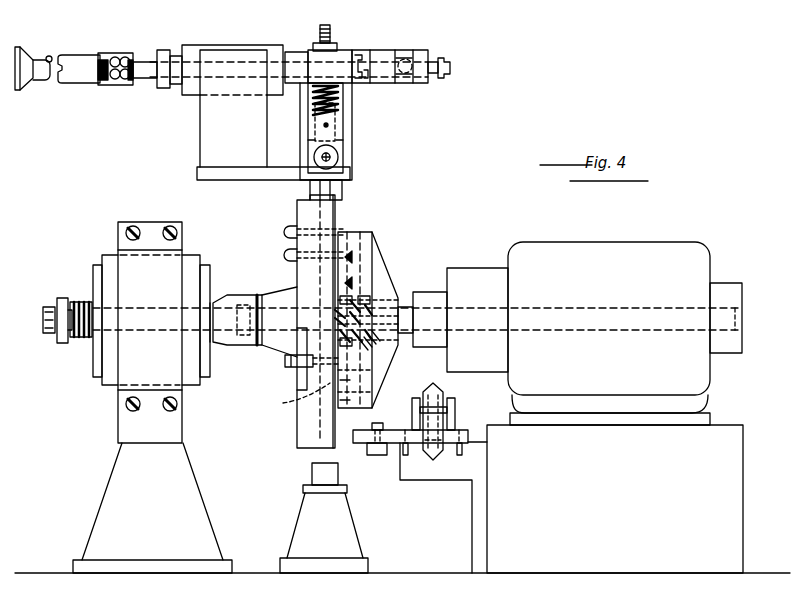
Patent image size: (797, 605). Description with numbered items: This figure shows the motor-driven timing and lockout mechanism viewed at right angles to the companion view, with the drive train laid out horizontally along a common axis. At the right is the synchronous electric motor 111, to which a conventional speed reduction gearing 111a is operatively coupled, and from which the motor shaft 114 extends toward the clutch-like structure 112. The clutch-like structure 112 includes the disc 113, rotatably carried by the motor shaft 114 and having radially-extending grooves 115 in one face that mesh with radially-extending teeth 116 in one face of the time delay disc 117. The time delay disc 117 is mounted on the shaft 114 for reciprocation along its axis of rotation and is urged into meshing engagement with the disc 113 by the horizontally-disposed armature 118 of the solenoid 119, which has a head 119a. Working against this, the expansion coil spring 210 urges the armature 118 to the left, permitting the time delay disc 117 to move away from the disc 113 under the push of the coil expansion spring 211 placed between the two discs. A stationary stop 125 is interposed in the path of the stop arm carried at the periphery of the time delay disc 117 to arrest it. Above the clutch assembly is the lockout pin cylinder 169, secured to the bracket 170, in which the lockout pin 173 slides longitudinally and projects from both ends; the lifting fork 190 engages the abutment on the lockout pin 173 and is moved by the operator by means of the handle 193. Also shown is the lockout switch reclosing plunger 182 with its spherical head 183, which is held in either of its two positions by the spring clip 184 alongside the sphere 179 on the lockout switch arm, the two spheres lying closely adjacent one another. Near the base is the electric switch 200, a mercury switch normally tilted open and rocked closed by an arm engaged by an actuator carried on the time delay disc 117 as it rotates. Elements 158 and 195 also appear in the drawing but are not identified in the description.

The synchronous electric motor 111 is at (650, 252).
The speed reduction gearing 111a is at (477, 275).
The clutch-like structure 112 is at (268, 272).
The disc 113 is at (362, 235).
The motor shaft 114 is at (400, 305).
The radially-extending grooves 115 is at (345, 283).
The radially-extending teeth 116 is at (291, 397).
The time delay disc 117 is at (310, 428).
The armature 118 is at (87, 302).
The solenoid 119 is at (192, 262).
The head 119a is at (245, 298).
The stationary stop 125 is at (333, 477).
The roller 158 is at (333, 157).
The lockout pin cylinder 169 is at (272, 50).
The bracket 170 is at (220, 142).
The lockout pin 173 is at (147, 77).
The sphere 179 is at (430, 57).
The lockout switch reclosing plunger 182 is at (368, 85).
The head 183 is at (418, 45).
The spring clip 184 is at (405, 85).
The lifting fork 190 is at (167, 50).
The handle 193 is at (72, 82).
The chuck 195 is at (122, 55).
The electric switch 200 is at (442, 395).
The expansion coil spring 210 is at (77, 338).
The coil expansion spring 211 is at (375, 285).